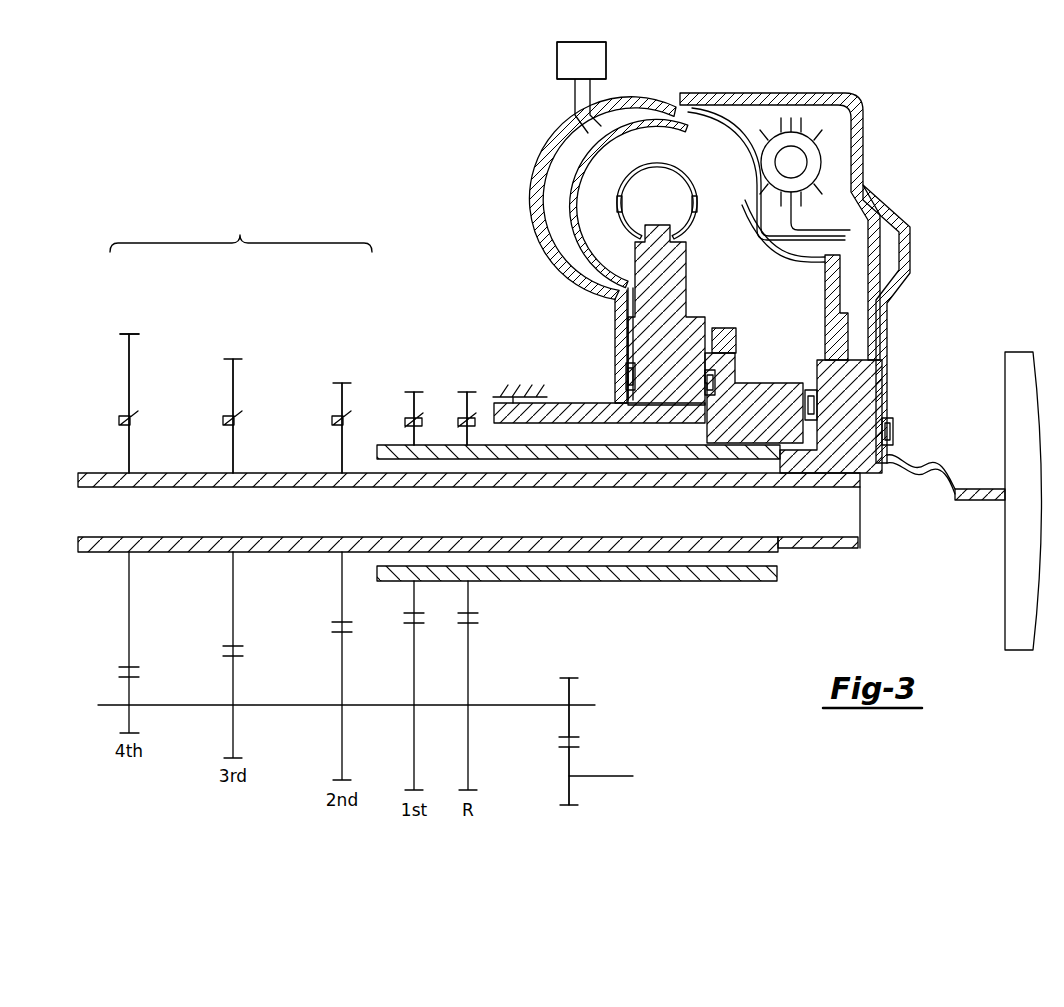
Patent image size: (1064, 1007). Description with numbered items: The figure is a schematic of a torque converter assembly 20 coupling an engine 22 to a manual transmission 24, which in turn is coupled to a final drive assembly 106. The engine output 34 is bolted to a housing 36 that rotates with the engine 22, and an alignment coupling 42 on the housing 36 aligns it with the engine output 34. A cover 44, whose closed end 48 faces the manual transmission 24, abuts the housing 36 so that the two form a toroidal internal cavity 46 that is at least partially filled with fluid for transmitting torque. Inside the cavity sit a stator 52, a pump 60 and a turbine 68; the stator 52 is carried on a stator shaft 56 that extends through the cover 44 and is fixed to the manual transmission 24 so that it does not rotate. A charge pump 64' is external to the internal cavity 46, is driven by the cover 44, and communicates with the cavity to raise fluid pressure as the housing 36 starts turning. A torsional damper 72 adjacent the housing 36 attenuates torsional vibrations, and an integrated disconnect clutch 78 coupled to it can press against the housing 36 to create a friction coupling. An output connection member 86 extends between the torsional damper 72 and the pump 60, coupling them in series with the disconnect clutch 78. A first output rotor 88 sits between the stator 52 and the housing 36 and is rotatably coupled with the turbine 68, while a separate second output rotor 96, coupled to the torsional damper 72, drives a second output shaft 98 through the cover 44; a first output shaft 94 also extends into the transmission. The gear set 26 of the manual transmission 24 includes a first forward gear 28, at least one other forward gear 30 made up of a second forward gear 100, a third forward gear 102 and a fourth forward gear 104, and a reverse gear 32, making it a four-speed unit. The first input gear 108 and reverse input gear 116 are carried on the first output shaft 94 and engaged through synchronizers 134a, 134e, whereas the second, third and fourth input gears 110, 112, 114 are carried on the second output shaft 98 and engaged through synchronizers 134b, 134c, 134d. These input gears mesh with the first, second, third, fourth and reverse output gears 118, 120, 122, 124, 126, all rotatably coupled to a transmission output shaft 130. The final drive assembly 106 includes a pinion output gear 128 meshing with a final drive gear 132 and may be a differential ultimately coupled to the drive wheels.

The torque converter assembly 20 is at (483, 158).
The engine 22 is at (1020, 352).
The manual transmission 24 is at (100, 283).
The gear set 26 is at (268, 790).
The first forward gear 28 is at (414, 386).
The other forward gear 30 is at (241, 232).
The reverse gear 32 is at (467, 386).
The engine output 34 is at (965, 488).
The housing 36 is at (905, 270).
The alignment coupling 42 is at (940, 468).
The cover 44 is at (560, 180).
The internal cavity 46 is at (767, 364).
The closed end 48 is at (545, 225).
The stator 52 is at (645, 335).
The stator shaft 56 is at (560, 410).
The pump 60 is at (597, 253).
The charge pump 64' is at (581, 87).
The turbine 68 is at (725, 262).
The torsional damper 72 is at (795, 133).
The integrated disconnect clutch 78 is at (873, 212).
The output connection member 86 is at (735, 130).
The first output rotor 88 is at (745, 400).
The first output shaft 94 is at (690, 575).
The second output rotor 96 is at (855, 440).
The second output shaft 98 is at (640, 537).
The second forward gear 100 is at (342, 376).
The third forward gear 102 is at (233, 353).
The fourth forward gear 104 is at (128, 328).
The final drive assembly 106 is at (635, 728).
The first input gear 108 is at (414, 408).
The second input gear 110 is at (342, 403).
The third input gear 112 is at (233, 397).
The fourth input gear 114 is at (129, 372).
The reverse input gear 116 is at (467, 408).
The first output gear 118 is at (414, 667).
The second output gear 120 is at (342, 672).
The third output gear 122 is at (233, 662).
The fourth output gear 124 is at (129, 672).
The reverse output gear 126 is at (468, 668).
The pinion output gear 128 is at (575, 678).
The transmission output shaft 130 is at (523, 685).
The final drive gear 132 is at (569, 790).
The synchronizer 134a is at (413, 428).
The synchronizer 134b is at (337, 425).
The synchronizer 134c is at (228, 425).
The synchronizer 134d is at (125, 425).
The synchronizer 134e is at (465, 428).